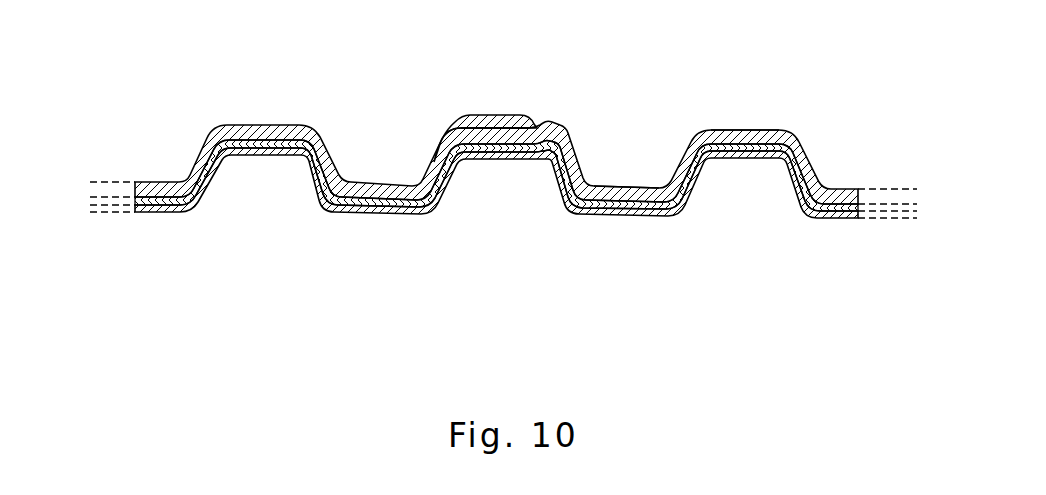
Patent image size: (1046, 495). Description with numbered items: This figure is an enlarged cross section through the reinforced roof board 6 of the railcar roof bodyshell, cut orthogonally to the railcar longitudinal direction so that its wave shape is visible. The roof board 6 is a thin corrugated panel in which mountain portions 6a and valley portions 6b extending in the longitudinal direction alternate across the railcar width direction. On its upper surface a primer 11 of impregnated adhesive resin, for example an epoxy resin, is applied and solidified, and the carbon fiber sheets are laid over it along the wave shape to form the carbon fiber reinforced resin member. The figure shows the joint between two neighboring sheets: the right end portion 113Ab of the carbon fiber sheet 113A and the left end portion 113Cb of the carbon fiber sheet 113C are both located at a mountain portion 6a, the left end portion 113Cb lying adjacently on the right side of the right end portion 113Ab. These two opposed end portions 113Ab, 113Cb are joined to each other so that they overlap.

The carbon fiber sheet 113A is at (263, 125).
The left end portion 113Cb is at (467, 115).
The right end portion 113Ab is at (519, 130).
The primer 11 is at (624, 205).
The carbon fiber sheet 113C is at (745, 130).
The roof board 6 is at (503, 155).
The valley portion 6b is at (410, 214).
The mountain portion 6a is at (508, 160).